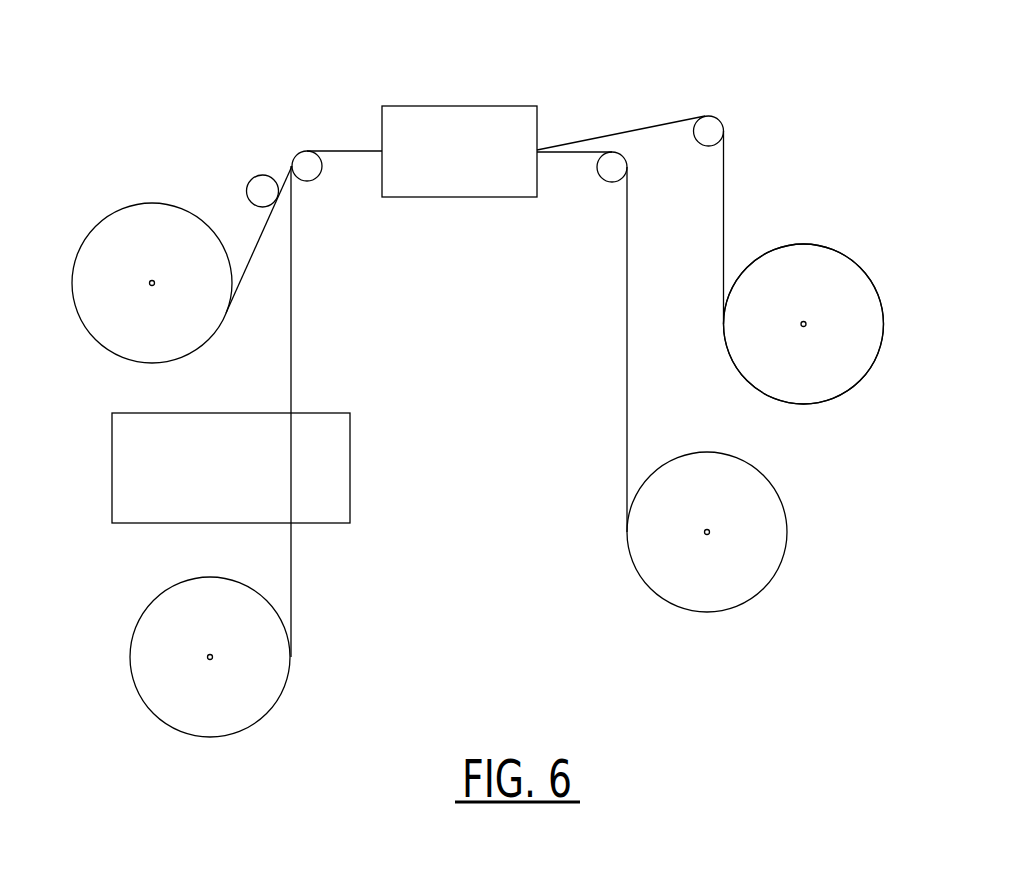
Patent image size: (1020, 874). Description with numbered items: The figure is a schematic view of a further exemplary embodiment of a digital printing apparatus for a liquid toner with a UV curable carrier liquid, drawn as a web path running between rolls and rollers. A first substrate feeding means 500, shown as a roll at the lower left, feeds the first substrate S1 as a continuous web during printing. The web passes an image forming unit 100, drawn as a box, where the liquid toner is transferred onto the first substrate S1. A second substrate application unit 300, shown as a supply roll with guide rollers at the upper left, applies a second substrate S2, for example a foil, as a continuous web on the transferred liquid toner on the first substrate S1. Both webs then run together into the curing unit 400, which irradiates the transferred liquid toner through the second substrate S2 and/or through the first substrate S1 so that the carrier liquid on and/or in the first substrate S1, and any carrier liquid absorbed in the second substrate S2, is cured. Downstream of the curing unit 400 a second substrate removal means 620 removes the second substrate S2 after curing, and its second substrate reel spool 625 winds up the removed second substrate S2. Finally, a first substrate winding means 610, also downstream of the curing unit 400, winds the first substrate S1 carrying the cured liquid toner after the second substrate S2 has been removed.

The second substrate application unit 300 is at (73, 122).
The image forming unit 100 is at (240, 425).
The curing unit 400 is at (468, 197).
The first substrate feeding means 500 is at (143, 647).
The first substrate winding means 610 is at (698, 603).
The second substrate removal means 620 is at (856, 217).
The second substrate reel spool 625 is at (832, 392).
The first substrate S1 is at (292, 566).
The second substrate S2 is at (262, 228).